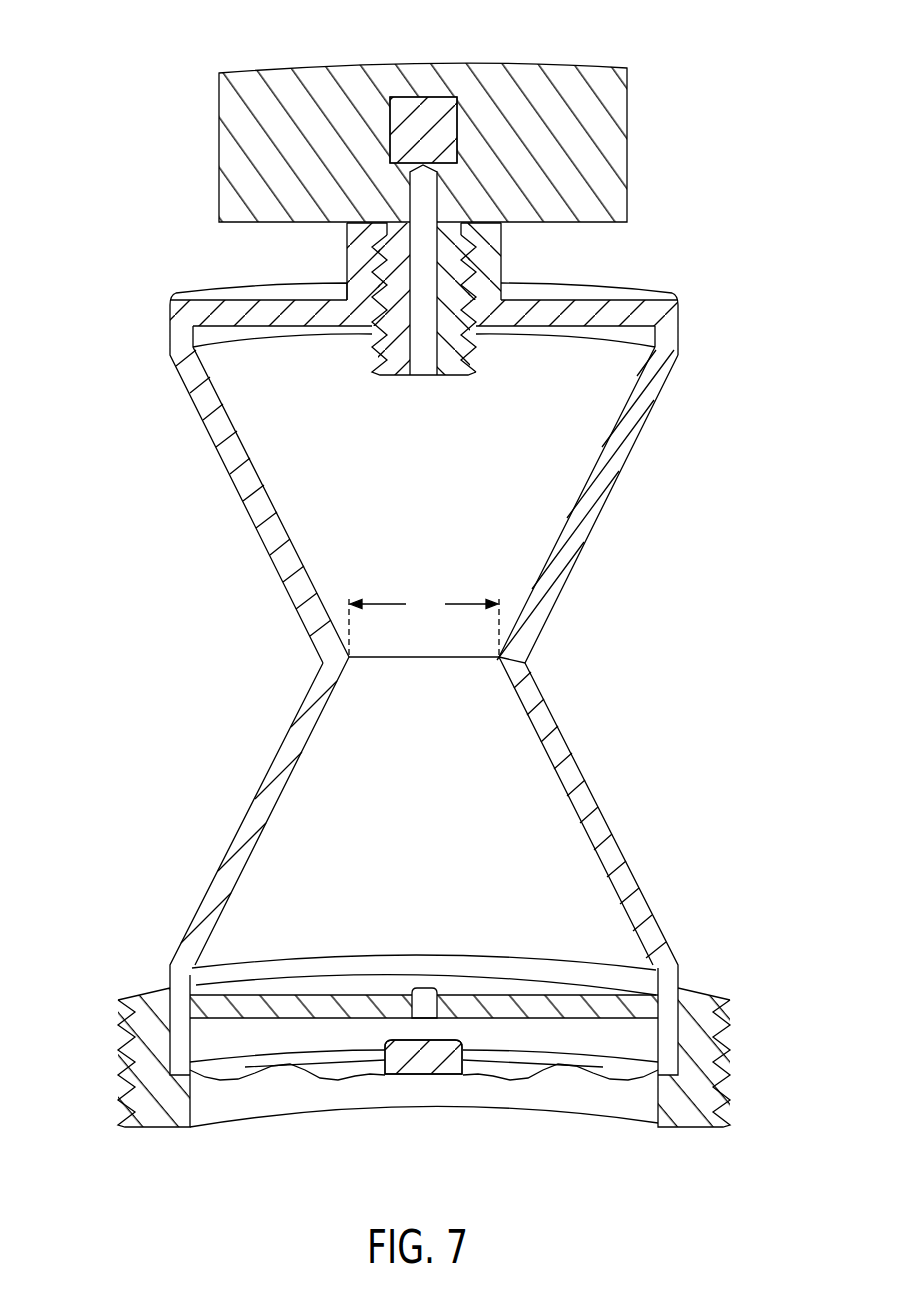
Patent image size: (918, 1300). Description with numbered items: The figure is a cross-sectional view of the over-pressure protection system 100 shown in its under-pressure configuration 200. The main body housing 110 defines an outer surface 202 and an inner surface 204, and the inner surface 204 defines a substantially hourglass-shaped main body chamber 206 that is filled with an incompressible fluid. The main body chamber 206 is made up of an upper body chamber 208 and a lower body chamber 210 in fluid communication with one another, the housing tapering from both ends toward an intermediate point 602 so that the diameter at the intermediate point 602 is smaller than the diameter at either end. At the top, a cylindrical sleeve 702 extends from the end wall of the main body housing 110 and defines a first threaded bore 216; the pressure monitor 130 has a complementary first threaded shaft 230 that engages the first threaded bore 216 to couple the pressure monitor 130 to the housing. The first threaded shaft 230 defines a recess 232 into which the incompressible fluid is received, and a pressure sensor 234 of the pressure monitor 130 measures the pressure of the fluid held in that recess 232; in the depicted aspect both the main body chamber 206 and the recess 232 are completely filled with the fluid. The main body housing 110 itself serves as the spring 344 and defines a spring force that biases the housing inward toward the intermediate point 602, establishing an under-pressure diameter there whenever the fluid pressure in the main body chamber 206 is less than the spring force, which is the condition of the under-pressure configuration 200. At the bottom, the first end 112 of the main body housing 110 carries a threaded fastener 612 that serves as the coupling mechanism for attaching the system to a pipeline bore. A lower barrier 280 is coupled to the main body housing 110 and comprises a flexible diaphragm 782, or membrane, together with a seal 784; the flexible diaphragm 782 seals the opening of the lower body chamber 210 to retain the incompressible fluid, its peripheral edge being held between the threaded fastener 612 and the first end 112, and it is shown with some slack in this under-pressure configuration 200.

The over-pressure protection system 100 is at (148, 75).
The under-pressure configuration 200 is at (133, 195).
The pressure monitor 130 is at (630, 146).
The pressure sensor 234 is at (430, 105).
The recess 232 is at (425, 348).
The first threaded shaft 230 is at (397, 274).
The first threaded bore 216 is at (464, 269).
The cylindrical sleeve 702 is at (501, 281).
The main body housing 110 is at (212, 413).
The outer surface 202 is at (664, 386).
The inner surface 204 is at (570, 443).
The main body chamber 206 is at (527, 511).
The upper body chamber 208 is at (504, 568).
The intermediate point 602 is at (525, 660).
The spring 344 is at (305, 626).
The lower body chamber 210 is at (558, 872).
The first end 112 is at (192, 1077).
The threaded fastener 612 is at (712, 1043).
The seal 784 is at (417, 1074).
The flexible diaphragm 782 is at (482, 1068).
The lower barrier 280 is at (613, 1070).